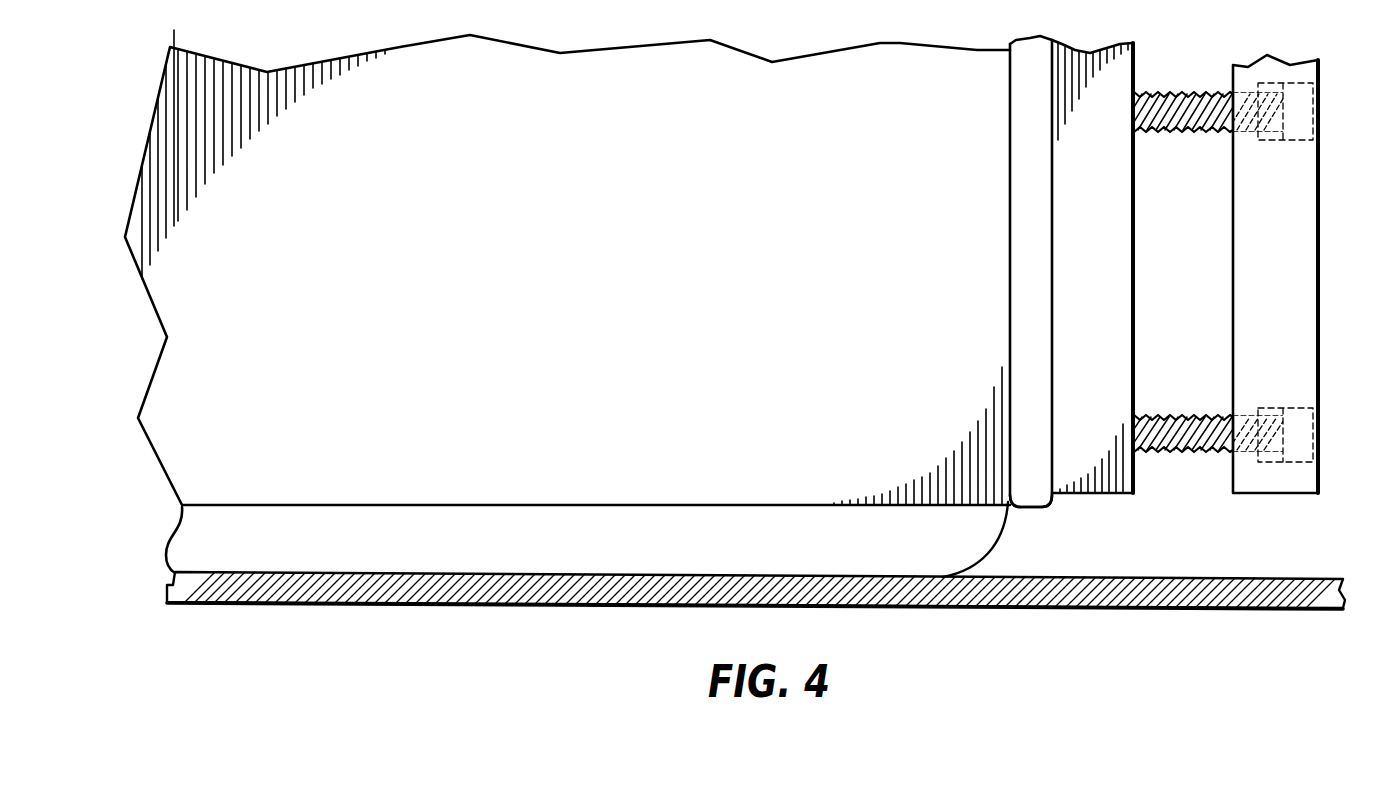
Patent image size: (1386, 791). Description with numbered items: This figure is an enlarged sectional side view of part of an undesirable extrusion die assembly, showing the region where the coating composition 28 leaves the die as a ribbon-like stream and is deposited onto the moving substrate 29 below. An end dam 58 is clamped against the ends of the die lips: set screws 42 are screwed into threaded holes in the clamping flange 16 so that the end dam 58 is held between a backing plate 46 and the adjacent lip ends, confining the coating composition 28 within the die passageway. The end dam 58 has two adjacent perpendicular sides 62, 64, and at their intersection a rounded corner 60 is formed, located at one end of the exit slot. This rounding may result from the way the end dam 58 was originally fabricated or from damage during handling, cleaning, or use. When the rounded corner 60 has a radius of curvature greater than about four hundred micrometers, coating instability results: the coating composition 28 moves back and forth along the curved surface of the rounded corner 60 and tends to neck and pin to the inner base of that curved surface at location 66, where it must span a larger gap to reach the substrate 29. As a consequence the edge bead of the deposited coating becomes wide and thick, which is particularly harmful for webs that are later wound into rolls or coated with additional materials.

The clamping flange 16 is at (1318, 258).
The coating composition 28 is at (993, 547).
The substrate 29 is at (1245, 578).
The set screws 42 is at (1181, 92).
The backing plate 46 is at (1097, 497).
The end dam 58 is at (1052, 258).
The rounded corner 60 is at (1013, 505).
The side of end dam 62 is at (1007, 67).
The side of end dam 64 is at (1030, 512).
The location at inner base of curved surface 66 is at (1012, 503).